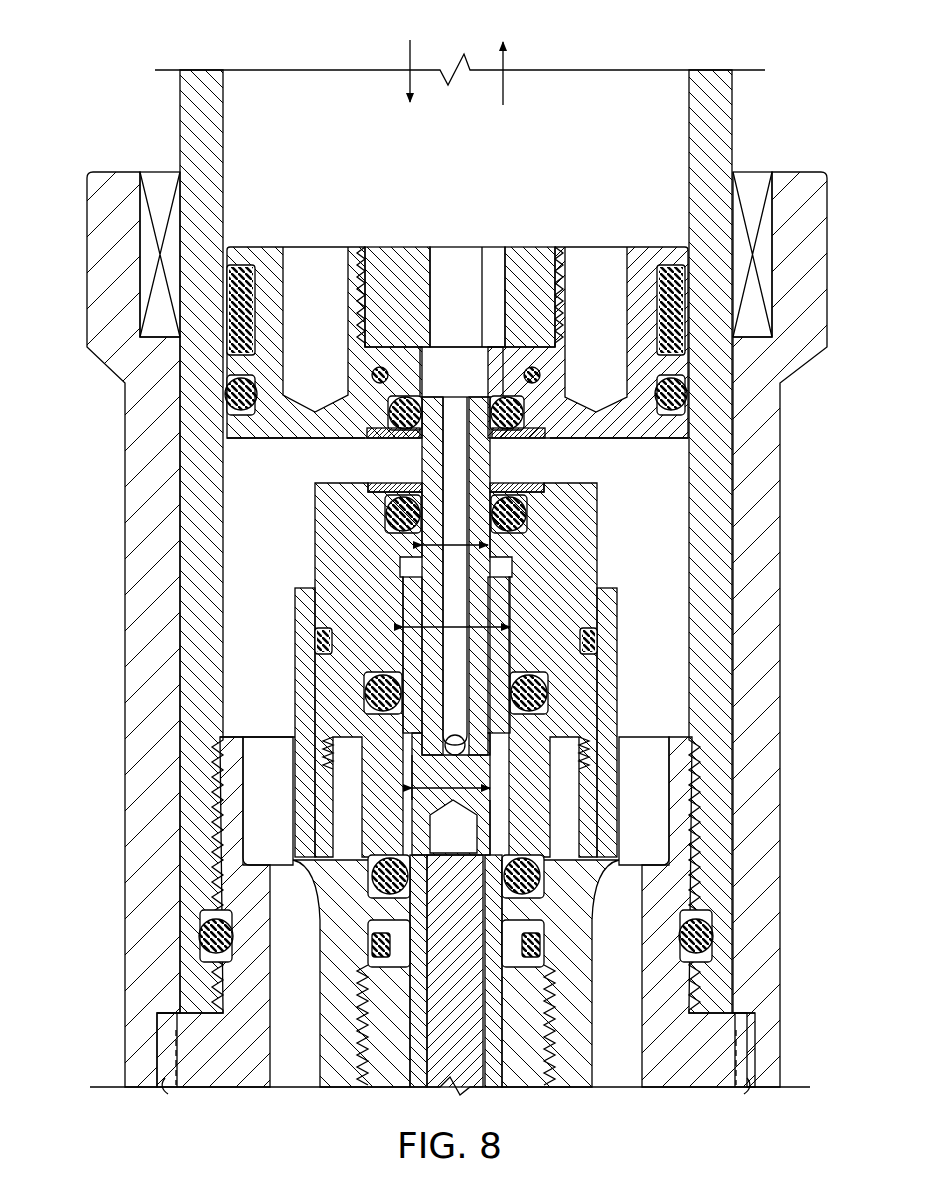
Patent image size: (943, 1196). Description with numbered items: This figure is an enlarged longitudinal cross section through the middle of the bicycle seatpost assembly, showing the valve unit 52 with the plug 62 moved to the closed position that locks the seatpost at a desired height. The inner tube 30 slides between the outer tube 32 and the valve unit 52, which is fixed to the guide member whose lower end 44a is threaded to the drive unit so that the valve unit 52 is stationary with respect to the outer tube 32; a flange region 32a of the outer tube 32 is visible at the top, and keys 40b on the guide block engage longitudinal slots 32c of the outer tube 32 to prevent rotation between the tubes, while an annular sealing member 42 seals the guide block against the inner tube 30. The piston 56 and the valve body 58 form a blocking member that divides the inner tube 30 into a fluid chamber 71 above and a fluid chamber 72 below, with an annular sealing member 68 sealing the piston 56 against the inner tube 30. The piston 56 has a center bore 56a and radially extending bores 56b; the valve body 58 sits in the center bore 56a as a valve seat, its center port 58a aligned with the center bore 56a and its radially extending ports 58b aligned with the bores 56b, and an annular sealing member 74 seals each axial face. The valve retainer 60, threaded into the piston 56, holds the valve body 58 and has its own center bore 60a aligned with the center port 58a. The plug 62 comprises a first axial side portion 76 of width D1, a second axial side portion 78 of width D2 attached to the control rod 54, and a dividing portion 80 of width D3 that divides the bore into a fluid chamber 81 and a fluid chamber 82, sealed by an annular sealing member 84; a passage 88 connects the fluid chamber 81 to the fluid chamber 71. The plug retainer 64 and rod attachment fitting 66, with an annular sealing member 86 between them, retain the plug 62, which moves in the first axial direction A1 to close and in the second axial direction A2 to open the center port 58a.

The inner tube 30 is at (180, 122).
The outer tube 32 is at (125, 712).
The body flange 32a is at (795, 172).
The longitudinal slots 32c is at (165, 1078).
The keys 40b is at (157, 1030).
The annular sealing member 42 is at (700, 935).
The lower end of the guide member 44a is at (357, 1020).
The valve unit 52 is at (262, 631).
The control rod 54 is at (455, 955).
The piston 56 is at (655, 290).
The center bore 56a is at (372, 352).
The radially extending bores 56b is at (330, 440).
The valve body 58 is at (525, 500).
The center port 58a is at (445, 462).
The radially extending ports 58b is at (530, 450).
The valve retainer 60 is at (525, 265).
The center bore of the valve retainer 60a is at (505, 277).
The plug 62 is at (417, 610).
The plug retainer 64 is at (375, 805).
The rod attachment fitting 66 is at (343, 880).
The annular sealing member 68 is at (675, 398).
The fluid chamber 71 is at (478, 165).
The fluid chamber 72 is at (278, 516).
The annular sealing member 74 is at (565, 410).
The first axial side portion 76 is at (420, 478).
The second axial side portion 78 is at (407, 768).
The dividing portion 80 is at (520, 605).
The fluid chamber 81 is at (520, 812).
The fluid chamber 82 is at (497, 567).
The annular sealing member 84 is at (385, 690).
The annular sealing member 86 is at (520, 878).
The passage 88 is at (460, 688).
The first maximum outer width D1 is at (445, 548).
The second maximum outer width D2 is at (495, 790).
The third maximum outer width D3 is at (520, 632).
The first axial direction A1 is at (503, 88).
The second axial direction A2 is at (410, 57).